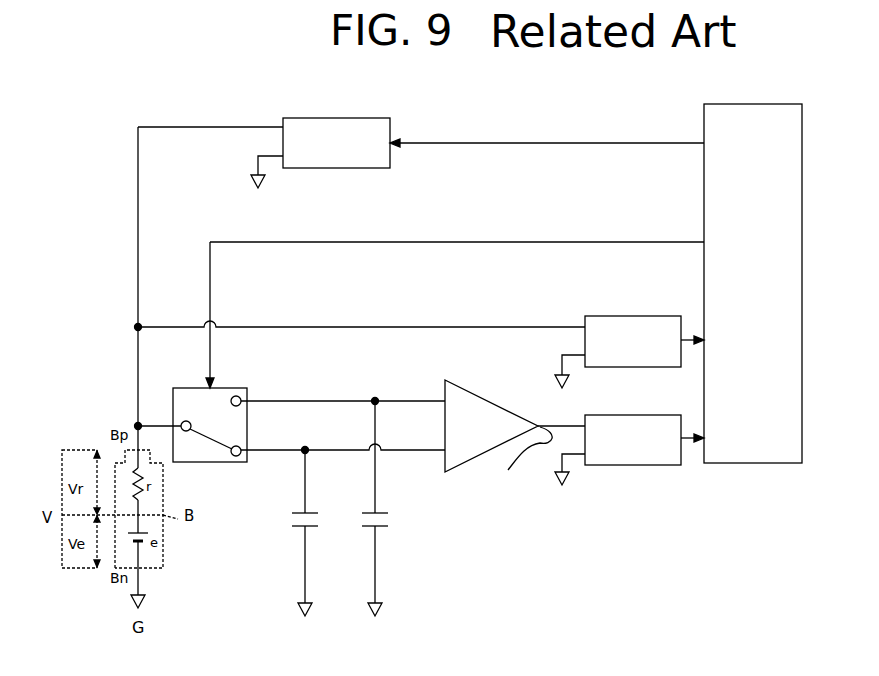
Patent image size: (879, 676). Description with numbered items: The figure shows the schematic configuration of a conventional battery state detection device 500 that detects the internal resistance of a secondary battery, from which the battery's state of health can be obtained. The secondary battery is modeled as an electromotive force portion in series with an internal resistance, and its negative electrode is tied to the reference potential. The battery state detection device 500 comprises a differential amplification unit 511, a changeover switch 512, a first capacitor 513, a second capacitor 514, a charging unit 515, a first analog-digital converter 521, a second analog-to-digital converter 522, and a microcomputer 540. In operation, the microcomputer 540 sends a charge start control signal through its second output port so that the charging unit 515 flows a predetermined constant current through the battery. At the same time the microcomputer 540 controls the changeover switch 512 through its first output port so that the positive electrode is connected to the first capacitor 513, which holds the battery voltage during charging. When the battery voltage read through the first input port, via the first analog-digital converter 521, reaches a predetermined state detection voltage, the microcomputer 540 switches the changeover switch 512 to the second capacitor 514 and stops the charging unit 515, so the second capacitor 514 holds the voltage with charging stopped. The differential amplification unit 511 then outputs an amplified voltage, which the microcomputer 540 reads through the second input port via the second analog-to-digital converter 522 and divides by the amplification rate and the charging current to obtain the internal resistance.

The battery state detection device 500 is at (178, 96).
The charging unit 515 is at (330, 117).
The microcomputer 540 is at (758, 103).
The first analog-digital converter 521 is at (632, 315).
The second analog-to-digital converter 522 is at (632, 414).
The differential amplification unit 511 is at (468, 462).
The changeover switch 512 is at (212, 466).
The first capacitor 513 is at (389, 520).
The second capacitor 514 is at (292, 520).